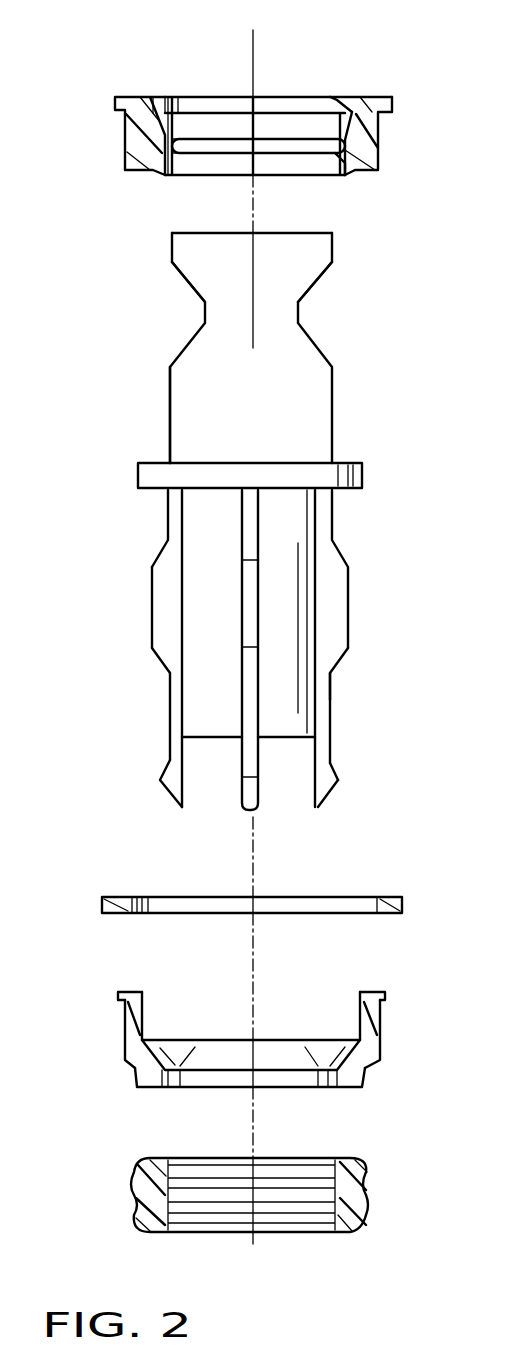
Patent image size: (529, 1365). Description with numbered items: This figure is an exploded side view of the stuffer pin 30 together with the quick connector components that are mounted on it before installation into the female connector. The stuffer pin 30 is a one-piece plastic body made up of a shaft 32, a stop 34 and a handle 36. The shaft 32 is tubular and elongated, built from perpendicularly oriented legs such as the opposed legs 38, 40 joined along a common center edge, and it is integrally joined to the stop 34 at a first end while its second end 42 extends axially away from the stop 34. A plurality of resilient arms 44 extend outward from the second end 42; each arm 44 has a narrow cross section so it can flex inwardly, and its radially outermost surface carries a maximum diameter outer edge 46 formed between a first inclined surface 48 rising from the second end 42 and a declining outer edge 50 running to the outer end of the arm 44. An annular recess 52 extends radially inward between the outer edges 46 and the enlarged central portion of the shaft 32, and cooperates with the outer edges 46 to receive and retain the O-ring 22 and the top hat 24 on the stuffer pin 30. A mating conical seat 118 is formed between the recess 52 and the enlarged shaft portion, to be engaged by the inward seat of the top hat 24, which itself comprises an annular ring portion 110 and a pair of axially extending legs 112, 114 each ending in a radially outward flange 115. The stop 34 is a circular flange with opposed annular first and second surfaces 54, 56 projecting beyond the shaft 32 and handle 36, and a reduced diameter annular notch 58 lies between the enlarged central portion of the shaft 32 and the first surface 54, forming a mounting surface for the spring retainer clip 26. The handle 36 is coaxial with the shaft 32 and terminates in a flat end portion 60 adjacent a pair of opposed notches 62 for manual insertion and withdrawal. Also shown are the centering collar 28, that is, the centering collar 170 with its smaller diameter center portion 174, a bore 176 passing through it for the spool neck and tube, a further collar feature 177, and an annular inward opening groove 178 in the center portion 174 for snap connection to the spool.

The O-ring 22 is at (120, 1197).
The top hat 24 is at (103, 1052).
The spring retainer ring or clip 26 is at (122, 888).
The centering collar 28 is at (430, 20).
The stuffer pin 30 is at (120, 502).
The shaft 32 is at (142, 610).
The stop 34 is at (130, 469).
The handle 36 is at (182, 250).
The leg 38 is at (152, 633).
The leg 40 is at (353, 583).
The second end 42 is at (288, 740).
The resilient arms 44 is at (147, 762).
The outer edge 46 is at (340, 783).
The first inclined surface 48 is at (351, 768).
The declining outer edge 50 is at (337, 793).
The annular recess 52 is at (332, 695).
The first surface 54 is at (153, 462).
The second surface 56 is at (153, 493).
The annular notch 58 is at (332, 508).
The flat end portion 60 is at (300, 233).
The notches 62 is at (200, 305).
The annular ring portion 110 is at (130, 1072).
The leg 112 is at (125, 1008).
The leg 114 is at (382, 1030).
The flange 115 is at (128, 992).
The conical seat 118 is at (155, 662).
The centering collar 170 is at (115, 96).
The center portion 174 is at (135, 140).
The bore 176 is at (337, 100).
The cap side wall 177 is at (392, 97).
The groove 178 is at (325, 147).